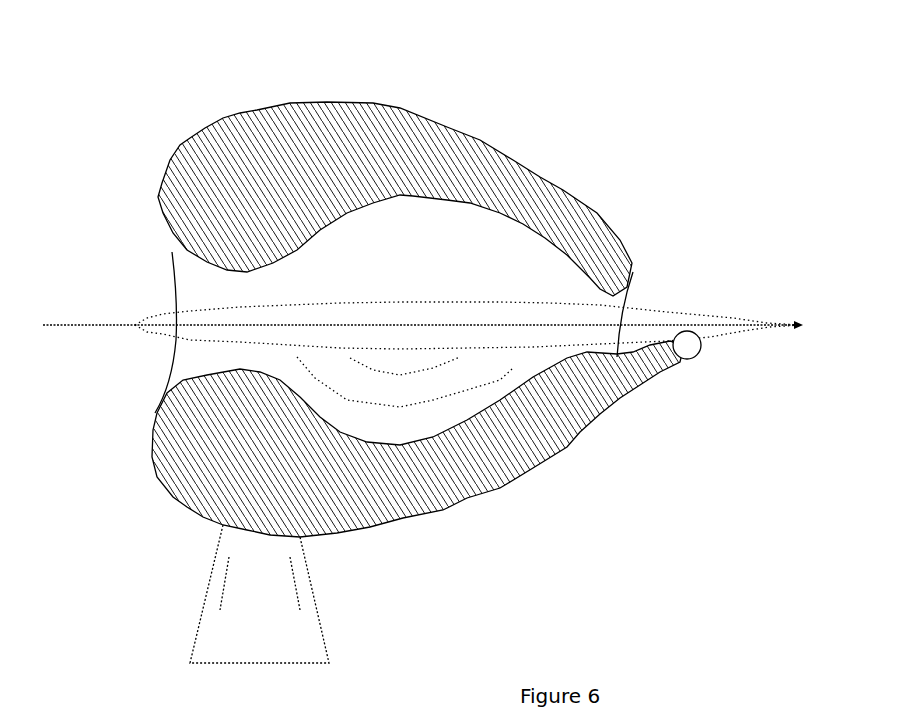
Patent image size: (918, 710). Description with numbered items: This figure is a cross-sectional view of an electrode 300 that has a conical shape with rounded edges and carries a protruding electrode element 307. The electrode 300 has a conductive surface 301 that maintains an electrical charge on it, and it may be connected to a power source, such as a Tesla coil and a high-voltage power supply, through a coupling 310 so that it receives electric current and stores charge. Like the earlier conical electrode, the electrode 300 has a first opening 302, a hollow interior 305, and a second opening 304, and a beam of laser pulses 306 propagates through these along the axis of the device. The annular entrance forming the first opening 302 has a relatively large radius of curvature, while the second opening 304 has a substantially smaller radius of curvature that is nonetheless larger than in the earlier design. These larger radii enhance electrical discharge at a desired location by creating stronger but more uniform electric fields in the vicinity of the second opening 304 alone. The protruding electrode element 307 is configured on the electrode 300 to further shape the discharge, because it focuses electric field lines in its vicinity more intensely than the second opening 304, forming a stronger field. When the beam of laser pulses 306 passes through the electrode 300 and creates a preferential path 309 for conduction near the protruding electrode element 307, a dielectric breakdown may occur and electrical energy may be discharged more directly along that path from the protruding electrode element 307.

The electrode 300 is at (647, 68).
The conductive surface 301 is at (508, 147).
The first opening 302 is at (177, 284).
The second opening 304 is at (633, 272).
The hollow interior 305 is at (415, 270).
The beam of laser pulses 306 is at (750, 329).
The protruding electrode element 307 is at (693, 358).
The preferential path 309 is at (550, 300).
The coupling 310 is at (306, 628).